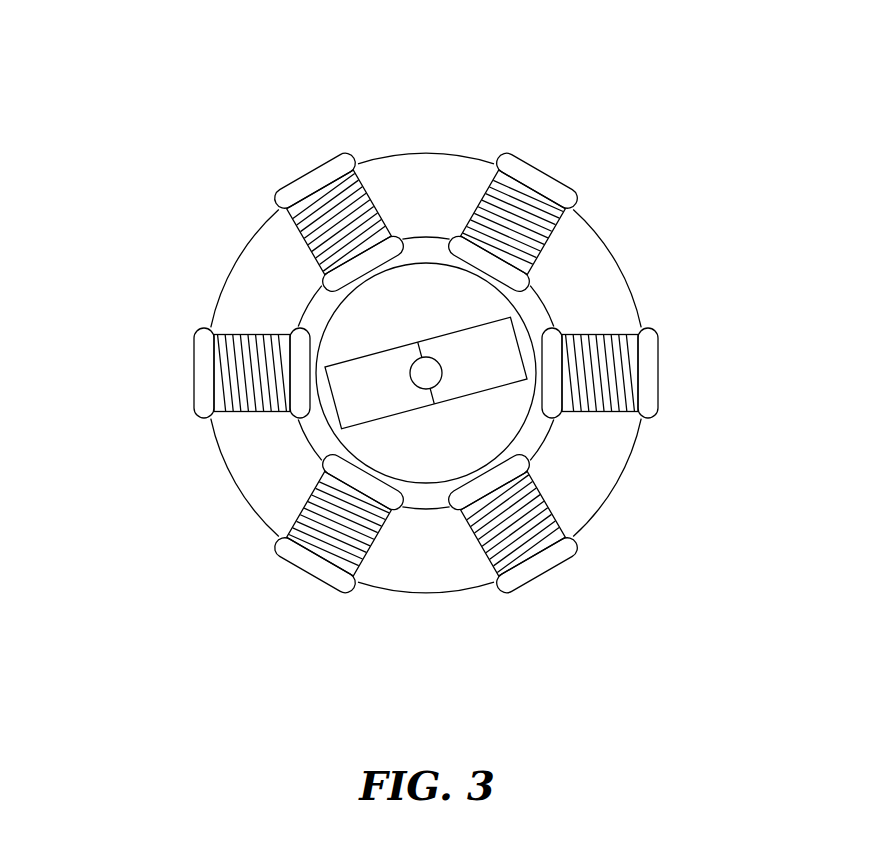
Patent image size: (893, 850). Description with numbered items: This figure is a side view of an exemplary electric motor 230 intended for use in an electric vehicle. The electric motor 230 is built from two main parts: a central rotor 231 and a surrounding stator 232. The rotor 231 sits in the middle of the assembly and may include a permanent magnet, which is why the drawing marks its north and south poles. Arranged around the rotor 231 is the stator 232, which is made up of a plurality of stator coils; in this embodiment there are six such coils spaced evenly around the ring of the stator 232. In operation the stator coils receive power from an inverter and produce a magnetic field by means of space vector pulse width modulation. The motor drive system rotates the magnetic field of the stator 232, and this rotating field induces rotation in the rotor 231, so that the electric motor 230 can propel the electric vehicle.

The electric motor 230 is at (397, 353).
The rotor 231 is at (355, 370).
The stator 232 is at (603, 445).